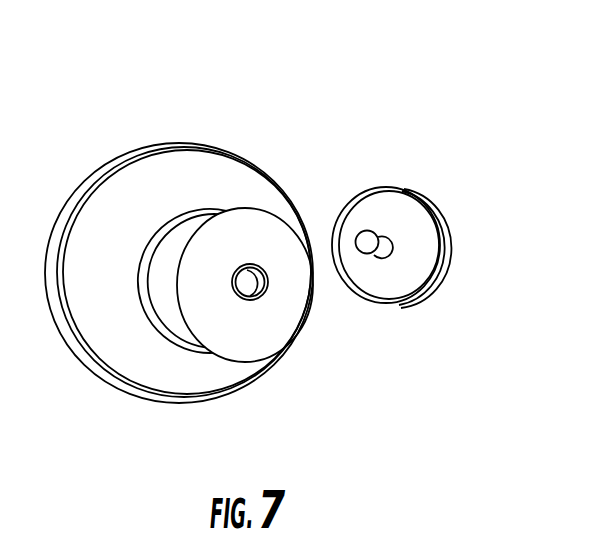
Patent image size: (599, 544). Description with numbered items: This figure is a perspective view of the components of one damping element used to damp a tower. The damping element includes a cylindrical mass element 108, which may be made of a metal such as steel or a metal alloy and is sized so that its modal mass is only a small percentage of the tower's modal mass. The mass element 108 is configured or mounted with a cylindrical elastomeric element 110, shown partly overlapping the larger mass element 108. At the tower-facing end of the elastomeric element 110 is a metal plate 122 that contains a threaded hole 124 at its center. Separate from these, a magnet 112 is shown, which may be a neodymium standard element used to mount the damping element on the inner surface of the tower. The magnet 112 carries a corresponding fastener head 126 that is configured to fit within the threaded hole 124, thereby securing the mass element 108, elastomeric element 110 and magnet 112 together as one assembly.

The mass element 108 is at (73, 185).
The elastomeric element 110 is at (185, 242).
The magnet 112 is at (413, 242).
The metal plate 122 is at (250, 225).
The threaded hole 124 is at (252, 290).
The fastener head 126 is at (370, 233).